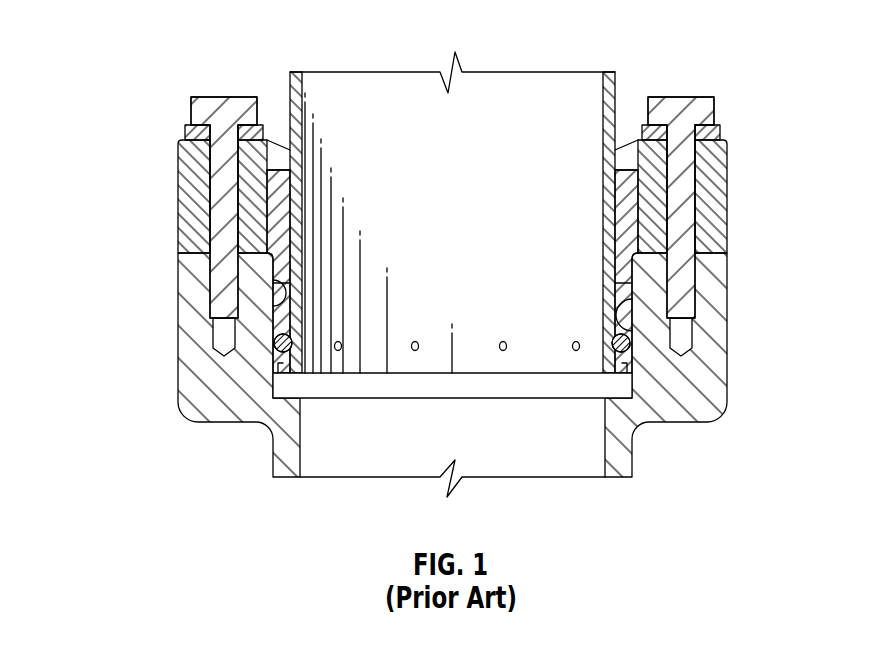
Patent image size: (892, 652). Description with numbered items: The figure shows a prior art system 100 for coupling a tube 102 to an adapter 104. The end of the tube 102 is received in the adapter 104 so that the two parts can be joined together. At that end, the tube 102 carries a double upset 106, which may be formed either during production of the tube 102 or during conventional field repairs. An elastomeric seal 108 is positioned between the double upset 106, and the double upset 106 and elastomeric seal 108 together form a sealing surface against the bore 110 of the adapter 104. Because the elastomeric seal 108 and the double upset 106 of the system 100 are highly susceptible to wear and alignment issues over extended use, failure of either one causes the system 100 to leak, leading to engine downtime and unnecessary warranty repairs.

The prior art system 100 is at (146, 190).
The tube 102 is at (533, 85).
The adapter 104 is at (336, 466).
The double upset 106 is at (281, 326).
The elastomeric seal 108 is at (621, 343).
The bore 110 is at (279, 288).